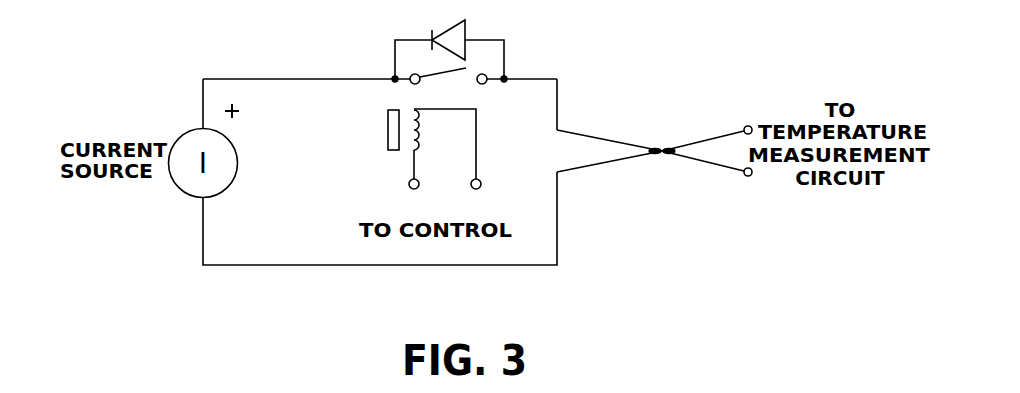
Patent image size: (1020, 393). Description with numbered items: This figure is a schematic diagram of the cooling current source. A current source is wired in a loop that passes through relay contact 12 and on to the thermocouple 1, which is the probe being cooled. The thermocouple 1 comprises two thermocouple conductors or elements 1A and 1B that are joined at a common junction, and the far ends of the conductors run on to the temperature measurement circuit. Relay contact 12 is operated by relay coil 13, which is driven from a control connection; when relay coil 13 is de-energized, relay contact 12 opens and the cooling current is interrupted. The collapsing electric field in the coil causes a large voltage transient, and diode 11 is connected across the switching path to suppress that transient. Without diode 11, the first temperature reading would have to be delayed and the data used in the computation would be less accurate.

The thermocouple 1 is at (654, 125).
The thermocouple conductor 1A is at (609, 145).
The thermocouple conductor 1B is at (703, 145).
The diode 11 is at (443, 47).
The relay contact 12 is at (448, 67).
The relay coil 13 is at (421, 149).